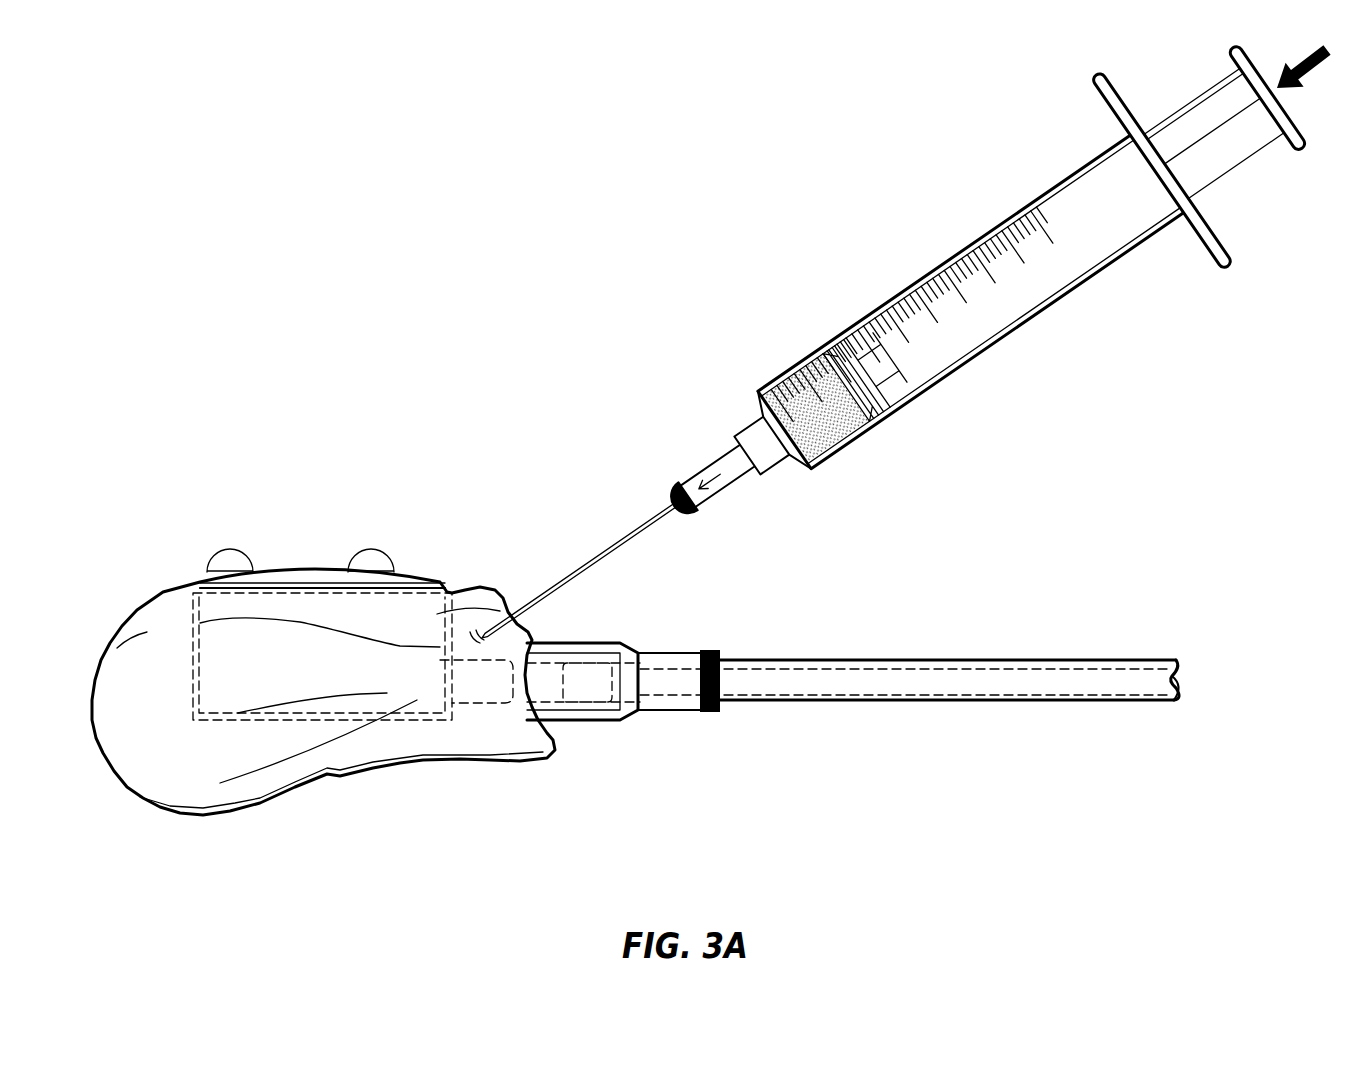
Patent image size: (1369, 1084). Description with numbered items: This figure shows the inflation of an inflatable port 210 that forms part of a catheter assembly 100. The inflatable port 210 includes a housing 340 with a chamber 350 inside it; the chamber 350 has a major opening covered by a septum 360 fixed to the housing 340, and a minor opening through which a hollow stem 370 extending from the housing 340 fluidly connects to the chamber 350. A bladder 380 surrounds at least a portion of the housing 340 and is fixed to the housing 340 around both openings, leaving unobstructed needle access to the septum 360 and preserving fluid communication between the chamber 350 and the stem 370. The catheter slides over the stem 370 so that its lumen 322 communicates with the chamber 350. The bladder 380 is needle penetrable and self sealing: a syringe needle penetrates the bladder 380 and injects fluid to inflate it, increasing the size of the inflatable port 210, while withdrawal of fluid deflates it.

The catheter assembly 100 is at (470, 280).
The inflatable port 210 is at (270, 452).
The lumen 322 is at (843, 690).
The housing 340 is at (185, 622).
The chamber 350 is at (410, 618).
The septum 360 is at (303, 570).
The hollow stem 370 is at (476, 700).
The bladder 380 is at (110, 695).